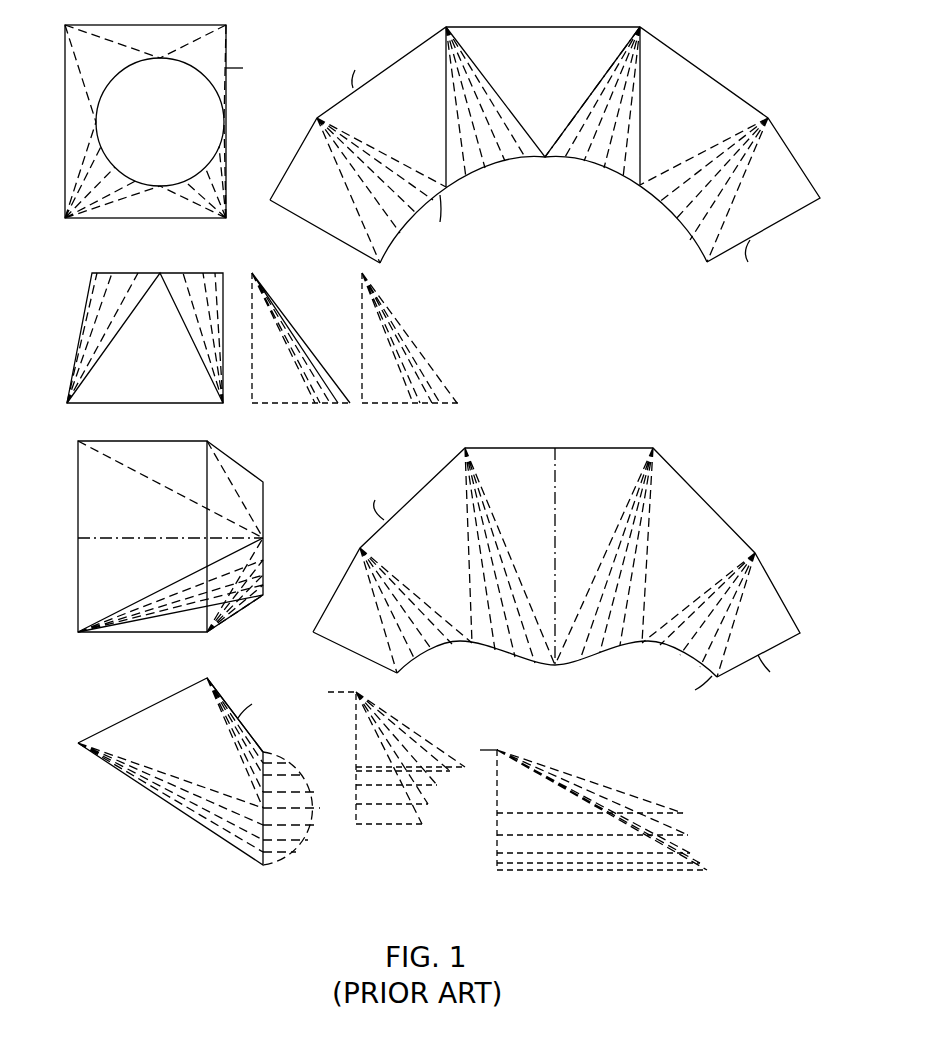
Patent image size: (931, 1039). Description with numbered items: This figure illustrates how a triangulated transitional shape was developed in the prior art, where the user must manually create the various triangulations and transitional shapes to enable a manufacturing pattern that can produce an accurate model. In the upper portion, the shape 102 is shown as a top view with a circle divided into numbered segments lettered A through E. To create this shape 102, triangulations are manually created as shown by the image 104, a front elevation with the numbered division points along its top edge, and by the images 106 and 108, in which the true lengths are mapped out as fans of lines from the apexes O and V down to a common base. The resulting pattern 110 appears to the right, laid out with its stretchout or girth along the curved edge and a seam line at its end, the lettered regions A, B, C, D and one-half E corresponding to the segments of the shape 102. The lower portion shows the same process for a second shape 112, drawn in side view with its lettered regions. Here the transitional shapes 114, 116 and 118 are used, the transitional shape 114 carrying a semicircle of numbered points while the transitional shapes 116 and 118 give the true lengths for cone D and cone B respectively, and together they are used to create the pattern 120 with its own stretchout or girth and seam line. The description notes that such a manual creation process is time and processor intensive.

The shape 102 is at (65, 105).
The image 104 is at (80, 340).
The image 106 is at (258, 406).
The image 108 is at (407, 340).
The pattern 110 is at (700, 72).
The shape 112 is at (78, 522).
The transitional shape 114 is at (122, 778).
The transitional shape 116 is at (410, 855).
The transitional shape 118 is at (702, 828).
The pattern 120 is at (705, 497).